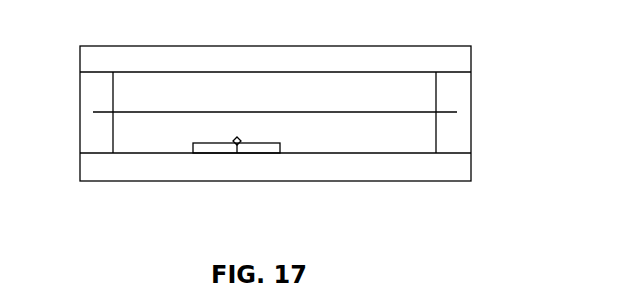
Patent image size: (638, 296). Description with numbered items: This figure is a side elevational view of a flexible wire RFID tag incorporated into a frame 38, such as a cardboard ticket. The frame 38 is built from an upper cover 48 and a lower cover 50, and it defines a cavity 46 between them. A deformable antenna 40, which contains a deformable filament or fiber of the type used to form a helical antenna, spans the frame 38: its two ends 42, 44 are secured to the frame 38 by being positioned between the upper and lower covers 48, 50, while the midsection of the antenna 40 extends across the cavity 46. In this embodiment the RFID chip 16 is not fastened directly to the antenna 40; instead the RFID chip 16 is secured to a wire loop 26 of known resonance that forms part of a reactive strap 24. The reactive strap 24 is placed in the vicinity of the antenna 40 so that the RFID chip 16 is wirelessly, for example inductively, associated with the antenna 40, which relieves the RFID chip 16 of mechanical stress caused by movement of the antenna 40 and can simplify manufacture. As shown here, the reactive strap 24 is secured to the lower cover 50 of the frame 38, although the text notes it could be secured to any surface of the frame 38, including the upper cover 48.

The RFID chip 16 is at (237, 153).
The reactive strap 24 is at (282, 146).
The wire loop 26 is at (193, 146).
The frame 38 is at (433, 181).
The deformable antenna 40 is at (398, 112).
The end of the deformable antenna 42 is at (105, 111).
The end of the deformable antenna 44 is at (447, 114).
The cavity 46 is at (147, 95).
The upper cover 48 is at (350, 63).
The lower cover 50 is at (127, 161).